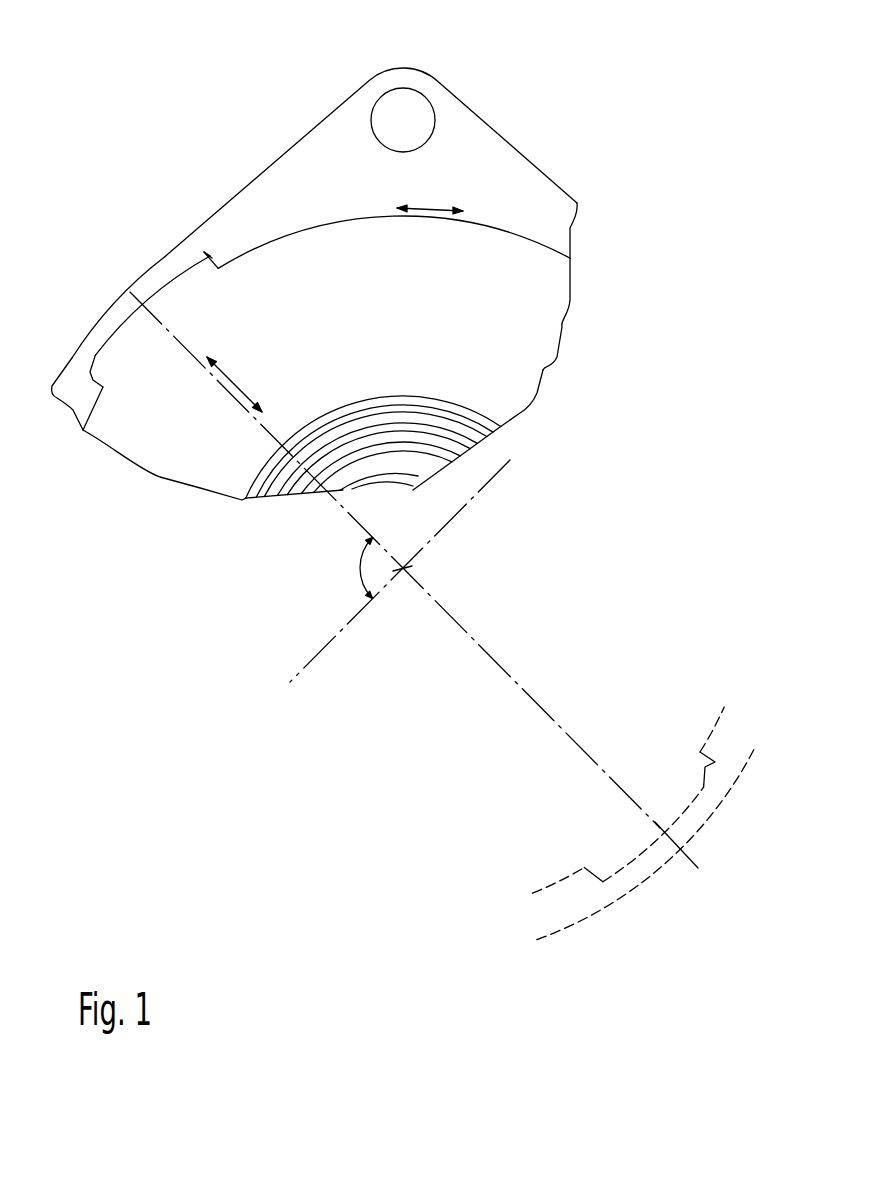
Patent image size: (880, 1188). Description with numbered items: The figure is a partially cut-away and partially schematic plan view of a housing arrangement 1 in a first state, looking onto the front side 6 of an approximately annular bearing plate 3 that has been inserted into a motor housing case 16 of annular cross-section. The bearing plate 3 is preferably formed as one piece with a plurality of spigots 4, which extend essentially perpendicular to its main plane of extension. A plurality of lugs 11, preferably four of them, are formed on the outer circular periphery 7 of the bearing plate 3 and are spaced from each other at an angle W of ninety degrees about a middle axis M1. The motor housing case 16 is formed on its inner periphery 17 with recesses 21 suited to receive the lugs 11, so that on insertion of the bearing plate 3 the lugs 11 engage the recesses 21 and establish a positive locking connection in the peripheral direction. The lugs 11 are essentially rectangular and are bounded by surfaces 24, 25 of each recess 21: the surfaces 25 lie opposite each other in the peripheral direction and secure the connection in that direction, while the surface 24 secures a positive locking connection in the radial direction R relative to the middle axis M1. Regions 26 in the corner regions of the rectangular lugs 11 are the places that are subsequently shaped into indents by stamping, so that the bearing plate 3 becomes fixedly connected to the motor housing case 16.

The housing arrangement 1 is at (371, 128).
The bearing plate 3 is at (343, 321).
The spigots 4 is at (435, 206).
The front side 6 is at (524, 380).
The outer circular periphery 7 is at (394, 205).
The inner periphery 17 is at (285, 237).
The lugs 11 is at (150, 258).
The motor housing case 16 is at (518, 167).
The recesses 21 is at (110, 340).
The surface 24 is at (122, 284).
The surfaces 25 is at (215, 262).
The regions 26 is at (212, 257).
The radial direction R is at (234, 383).
The angle W is at (355, 567).
The middle axis M1 is at (412, 570).